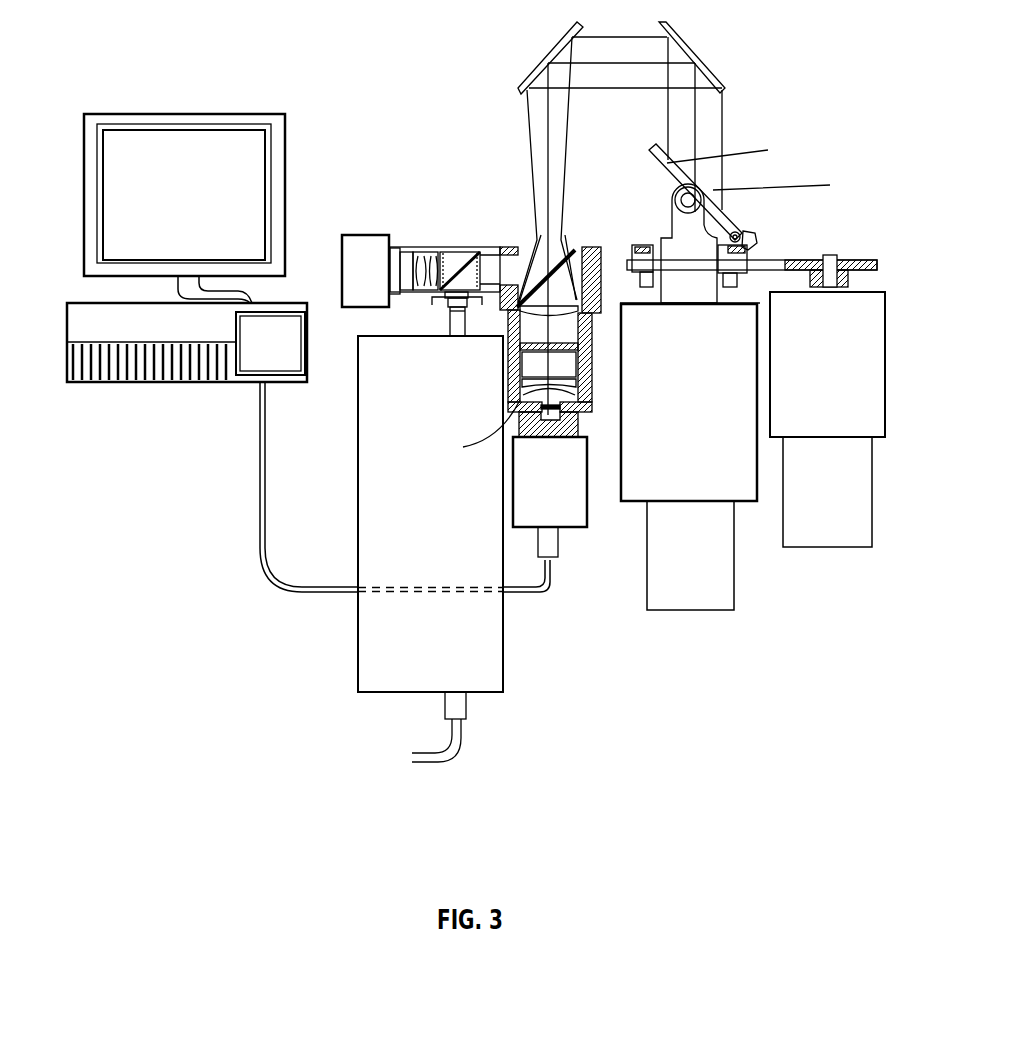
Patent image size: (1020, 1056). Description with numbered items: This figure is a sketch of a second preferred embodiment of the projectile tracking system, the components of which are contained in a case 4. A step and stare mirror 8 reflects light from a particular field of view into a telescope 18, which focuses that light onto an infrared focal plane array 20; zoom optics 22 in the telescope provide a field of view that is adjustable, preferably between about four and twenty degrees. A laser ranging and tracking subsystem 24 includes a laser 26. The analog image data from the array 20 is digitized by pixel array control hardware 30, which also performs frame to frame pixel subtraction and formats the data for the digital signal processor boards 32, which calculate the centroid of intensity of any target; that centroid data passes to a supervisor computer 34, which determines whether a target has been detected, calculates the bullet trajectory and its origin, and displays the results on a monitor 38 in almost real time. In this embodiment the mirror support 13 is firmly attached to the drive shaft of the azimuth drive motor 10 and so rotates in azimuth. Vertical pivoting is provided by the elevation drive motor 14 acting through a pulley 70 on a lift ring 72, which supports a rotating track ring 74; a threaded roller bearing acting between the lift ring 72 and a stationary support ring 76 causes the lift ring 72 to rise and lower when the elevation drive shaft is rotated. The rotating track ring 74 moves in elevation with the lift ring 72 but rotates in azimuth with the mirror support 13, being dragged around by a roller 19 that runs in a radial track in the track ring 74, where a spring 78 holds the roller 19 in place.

The case 4 is at (670, 163).
The step and stare mirror 8 is at (541, 248).
The azimuth drive motor 10 is at (689, 457).
The mirror support 13 is at (681, 230).
The elevation drive motor 14 is at (827, 419).
The telescope 18 is at (576, 346).
The roller 19 is at (738, 233).
The infrared focal plane array 20 is at (553, 437).
The zoom optics 22 is at (578, 425).
The laser ranging and tracking subsystem 24 is at (300, 646).
The laser 26 is at (454, 549).
The pixel array control hardware 30 is at (564, 518).
The digital signal processor boards 32 is at (257, 374).
The supervisor computer 34 is at (90, 312).
The monitor 38 is at (250, 150).
The pulley 70 is at (857, 257).
The lift ring 72 is at (745, 257).
The rotating track ring 74 is at (643, 244).
The stationary support ring 76 is at (738, 288).
The spring 78 is at (745, 232).